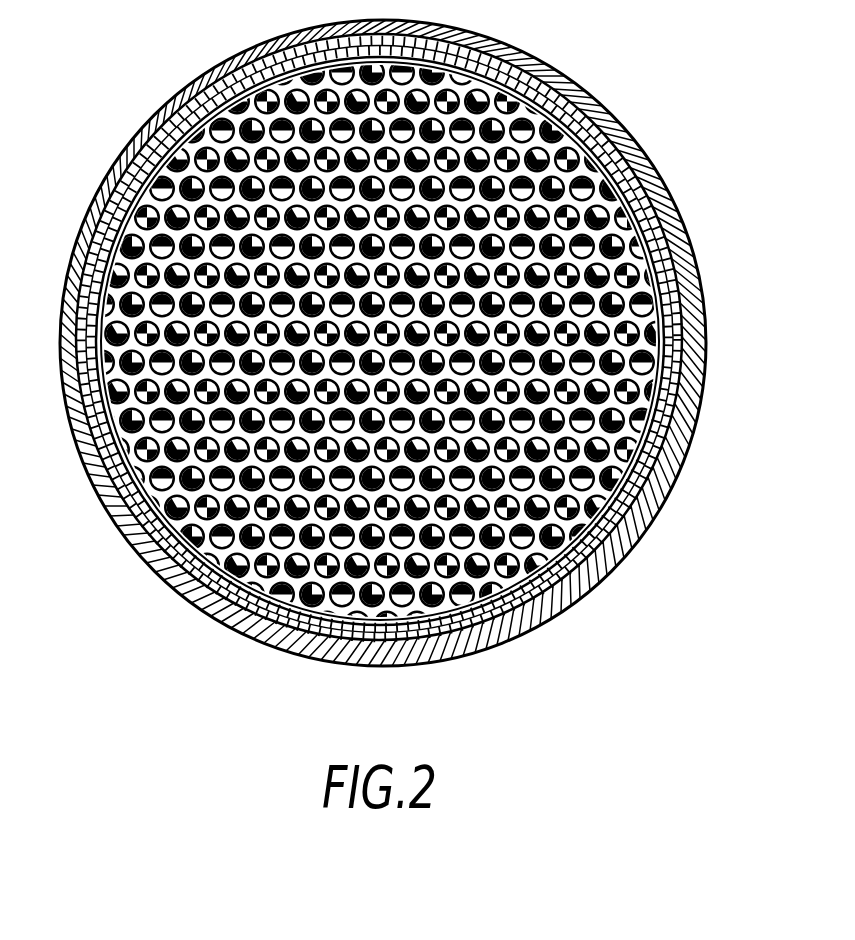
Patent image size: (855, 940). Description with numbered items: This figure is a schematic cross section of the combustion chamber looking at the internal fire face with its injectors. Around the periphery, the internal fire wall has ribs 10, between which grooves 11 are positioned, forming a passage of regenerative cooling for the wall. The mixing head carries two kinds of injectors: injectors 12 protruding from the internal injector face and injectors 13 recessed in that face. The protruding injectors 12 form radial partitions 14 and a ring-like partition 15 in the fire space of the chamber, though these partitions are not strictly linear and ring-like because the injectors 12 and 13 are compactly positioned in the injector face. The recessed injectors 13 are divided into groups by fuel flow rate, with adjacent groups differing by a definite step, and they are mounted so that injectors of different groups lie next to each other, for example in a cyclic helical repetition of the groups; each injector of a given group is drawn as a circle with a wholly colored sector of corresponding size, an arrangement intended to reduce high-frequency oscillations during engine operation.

The ribs 10 is at (98, 215).
The grooves 11 is at (85, 226).
The injectors protruding from the internal injector face 12 is at (648, 188).
The injectors recessed in the internal injector face 13 is at (662, 266).
The radial partitions 14 is at (118, 492).
The ring-like partition 15 is at (280, 371).